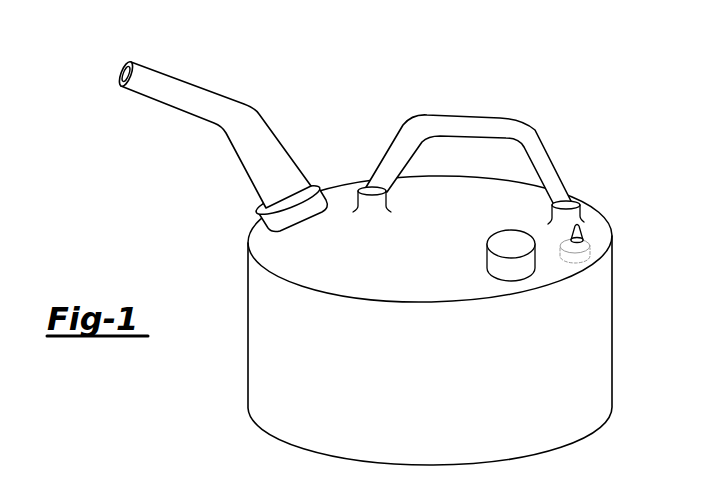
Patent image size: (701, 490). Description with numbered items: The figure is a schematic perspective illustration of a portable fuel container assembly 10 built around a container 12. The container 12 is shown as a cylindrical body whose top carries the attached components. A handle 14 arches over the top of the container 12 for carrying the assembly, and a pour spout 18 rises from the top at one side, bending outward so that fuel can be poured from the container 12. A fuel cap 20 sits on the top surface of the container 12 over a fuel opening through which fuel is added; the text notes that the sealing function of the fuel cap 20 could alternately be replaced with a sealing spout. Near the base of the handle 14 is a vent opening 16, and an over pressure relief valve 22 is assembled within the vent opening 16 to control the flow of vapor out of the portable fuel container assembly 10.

The portable fuel container assembly 10 is at (130, 183).
The container 12 is at (258, 364).
The handle 14 is at (483, 130).
The vent opening 16 is at (581, 232).
The pour spout 18 is at (186, 93).
The fuel cap 20 is at (512, 246).
The over pressure relief valve 22 is at (592, 213).